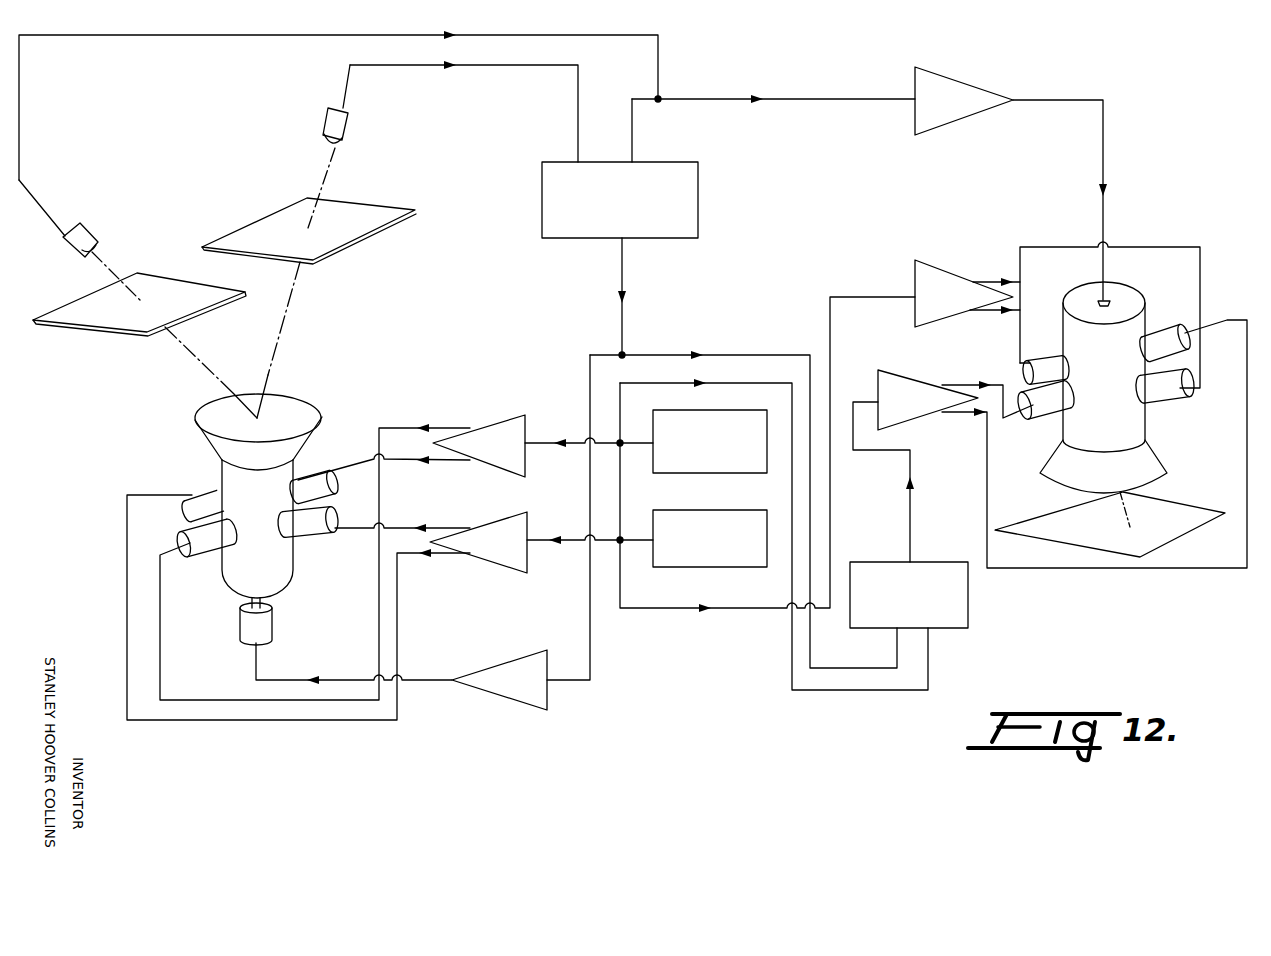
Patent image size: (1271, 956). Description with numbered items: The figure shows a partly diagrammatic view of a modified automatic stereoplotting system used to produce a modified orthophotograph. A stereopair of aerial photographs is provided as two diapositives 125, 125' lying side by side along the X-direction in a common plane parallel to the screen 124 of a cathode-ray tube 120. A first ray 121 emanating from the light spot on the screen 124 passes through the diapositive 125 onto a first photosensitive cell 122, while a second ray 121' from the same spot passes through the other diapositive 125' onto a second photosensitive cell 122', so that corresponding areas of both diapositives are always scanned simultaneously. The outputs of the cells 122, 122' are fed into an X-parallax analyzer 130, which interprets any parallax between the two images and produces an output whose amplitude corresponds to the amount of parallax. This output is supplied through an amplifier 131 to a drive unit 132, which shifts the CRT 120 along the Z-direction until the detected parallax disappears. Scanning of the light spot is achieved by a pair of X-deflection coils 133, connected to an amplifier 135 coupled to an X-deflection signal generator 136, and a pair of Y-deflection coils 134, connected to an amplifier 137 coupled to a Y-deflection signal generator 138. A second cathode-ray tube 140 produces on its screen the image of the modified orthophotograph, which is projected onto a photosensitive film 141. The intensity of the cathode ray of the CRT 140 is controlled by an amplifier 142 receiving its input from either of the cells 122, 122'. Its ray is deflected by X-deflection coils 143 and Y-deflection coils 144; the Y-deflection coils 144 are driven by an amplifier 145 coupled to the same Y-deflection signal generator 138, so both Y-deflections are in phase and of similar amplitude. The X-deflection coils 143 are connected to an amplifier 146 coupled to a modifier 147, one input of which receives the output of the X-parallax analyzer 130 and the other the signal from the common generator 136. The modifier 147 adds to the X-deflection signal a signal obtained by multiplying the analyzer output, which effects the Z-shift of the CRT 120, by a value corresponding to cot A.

The cathode-ray tube 120 is at (285, 582).
The first ray 121 is at (174, 335).
The second ray 121' is at (303, 283).
The first photosensitive cell 122 is at (76, 218).
The second photosensitive cell 122' is at (366, 104).
The screen 124 is at (295, 408).
The diapositive 125 is at (139, 320).
The diapositive 125' is at (310, 232).
The X-parallax analyzer 130 is at (663, 150).
The amplifier 131 is at (522, 698).
The drive unit 132 is at (268, 627).
The X-deflection coils 133 is at (318, 468).
The Y-deflection coils 134 is at (195, 472).
The amplifier 135 is at (505, 392).
The X-deflection signal generator 136 is at (770, 404).
The amplifier 137 is at (490, 520).
The Y-deflection signal generator 138 is at (730, 568).
The second cathode-ray tube 140 is at (1098, 477).
The photosensitive film 141 is at (1170, 517).
The amplifier 142 is at (978, 92).
The X-deflection coils 143 is at (1160, 335).
The Y-deflection coils 144 is at (1040, 358).
The amplifier 145 is at (935, 275).
The amplifier 146 is at (890, 376).
The modifier 147 is at (968, 588).